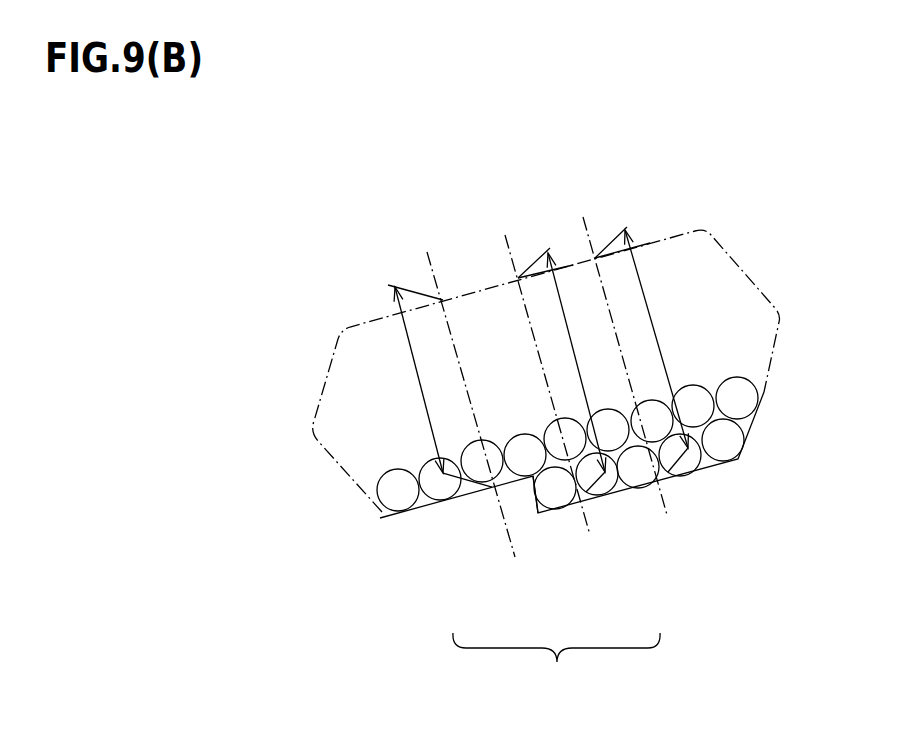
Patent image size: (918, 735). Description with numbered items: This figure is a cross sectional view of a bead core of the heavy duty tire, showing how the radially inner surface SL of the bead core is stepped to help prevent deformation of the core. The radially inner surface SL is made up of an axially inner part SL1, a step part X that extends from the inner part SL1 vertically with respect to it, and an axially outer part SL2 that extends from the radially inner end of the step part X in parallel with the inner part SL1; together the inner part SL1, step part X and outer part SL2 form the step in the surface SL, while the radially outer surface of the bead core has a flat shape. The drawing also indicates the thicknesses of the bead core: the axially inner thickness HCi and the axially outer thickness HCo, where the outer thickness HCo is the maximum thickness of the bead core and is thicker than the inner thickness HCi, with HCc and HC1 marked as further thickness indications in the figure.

The axially inner thickness HCi is at (414, 362).
The center hole angle HCc is at (568, 326).
The axially outer thickness HCo is at (648, 313).
The first hole HC1 is at (625, 366).
The step part X is at (534, 505).
The axially inner part SL1 is at (427, 507).
The axially outer part SL2 is at (627, 493).
The radially inner surface SL is at (572, 544).